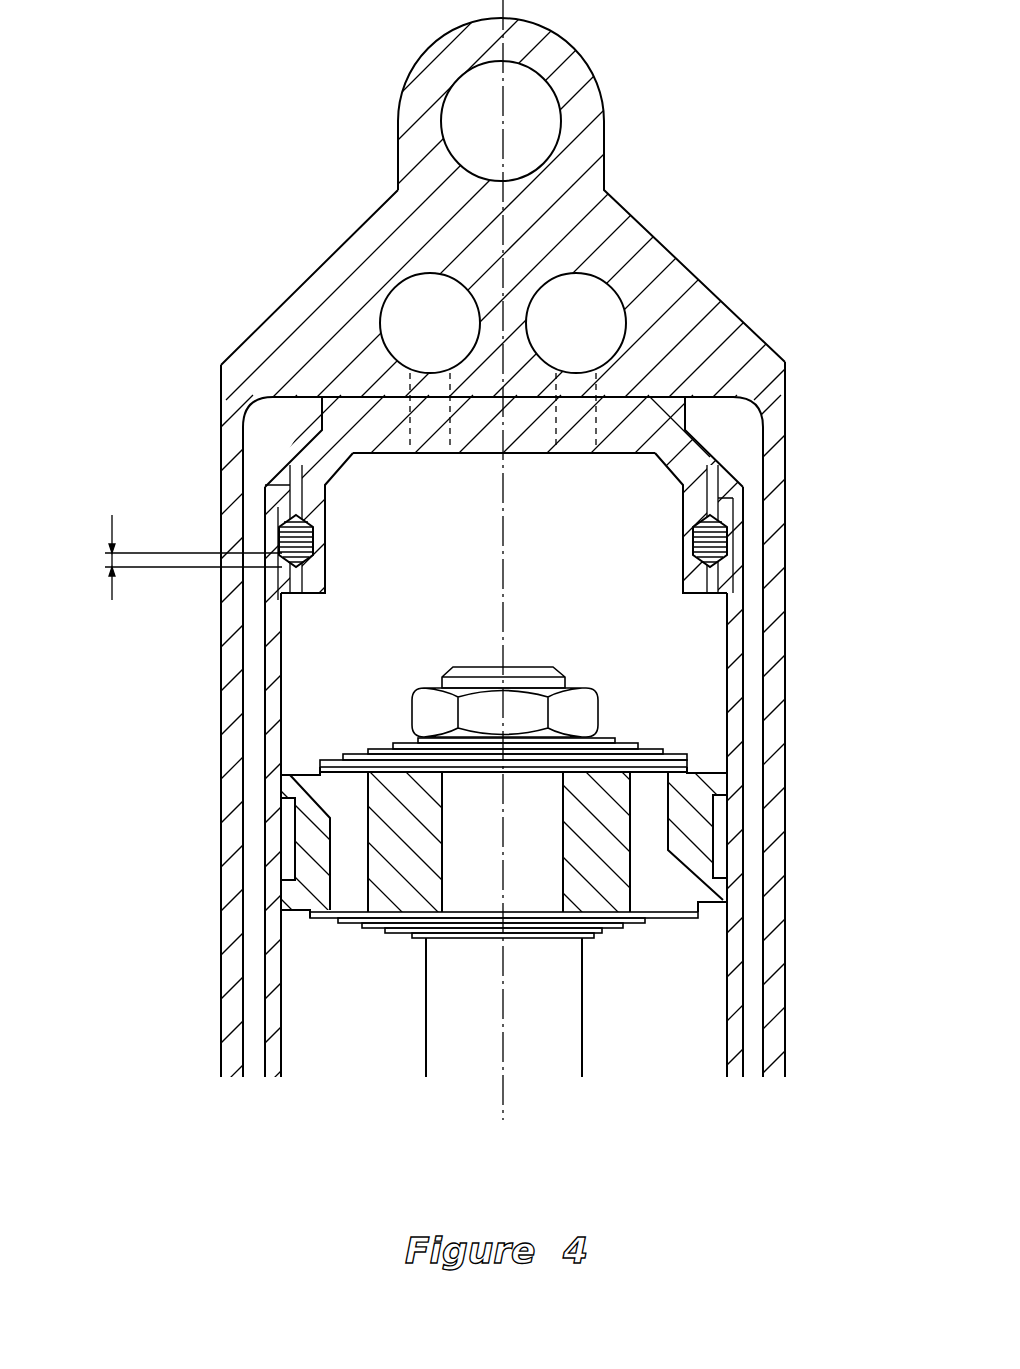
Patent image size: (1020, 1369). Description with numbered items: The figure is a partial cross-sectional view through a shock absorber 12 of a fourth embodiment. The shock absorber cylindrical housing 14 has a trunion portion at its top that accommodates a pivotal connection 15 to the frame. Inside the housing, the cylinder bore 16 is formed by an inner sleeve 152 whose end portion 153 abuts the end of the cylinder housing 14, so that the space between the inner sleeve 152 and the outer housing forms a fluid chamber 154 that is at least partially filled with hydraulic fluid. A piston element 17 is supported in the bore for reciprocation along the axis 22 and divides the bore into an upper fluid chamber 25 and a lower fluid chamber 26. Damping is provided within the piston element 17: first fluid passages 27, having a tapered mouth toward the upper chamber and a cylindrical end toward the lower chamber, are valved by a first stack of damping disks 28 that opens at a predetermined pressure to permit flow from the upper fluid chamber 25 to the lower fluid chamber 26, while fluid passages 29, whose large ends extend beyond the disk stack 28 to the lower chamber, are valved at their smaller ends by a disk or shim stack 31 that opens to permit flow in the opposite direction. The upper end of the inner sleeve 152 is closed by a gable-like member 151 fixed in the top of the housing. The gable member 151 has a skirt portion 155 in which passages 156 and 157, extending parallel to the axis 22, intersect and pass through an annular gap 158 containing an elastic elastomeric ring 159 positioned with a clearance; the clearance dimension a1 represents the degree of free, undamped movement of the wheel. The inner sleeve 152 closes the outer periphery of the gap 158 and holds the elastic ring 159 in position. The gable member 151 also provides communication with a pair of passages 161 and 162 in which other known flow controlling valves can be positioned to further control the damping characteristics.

The shock absorber 12 is at (817, 693).
The shock absorber cylindrical housing 14 is at (787, 737).
The pivotal connection 15 is at (543, 122).
The cylinder bore 16 is at (727, 1063).
The piston element 17 is at (408, 886).
The axis 22 is at (507, 1088).
The upper fluid chamber 25 is at (616, 627).
The lower fluid chamber 26 is at (666, 1040).
The first fluid passages 27 is at (348, 888).
The first stack of damping disks 28 is at (637, 935).
The fluid passages 29 is at (662, 882).
The disk or shim stack 31 is at (605, 743).
The gable-like member 151 is at (352, 415).
The inner sleeve 152 is at (745, 903).
The end portion 153 is at (655, 397).
The fluid chamber 154 is at (760, 648).
The skirt portion 155 is at (317, 596).
The passage 156 is at (292, 497).
The passage 157 is at (282, 588).
The annular gap 158 is at (727, 557).
The elastic elastomeric ring 159 is at (722, 518).
The passage 161 is at (450, 343).
The passage 162 is at (596, 343).
The clearance dimension a1 is at (165, 557).